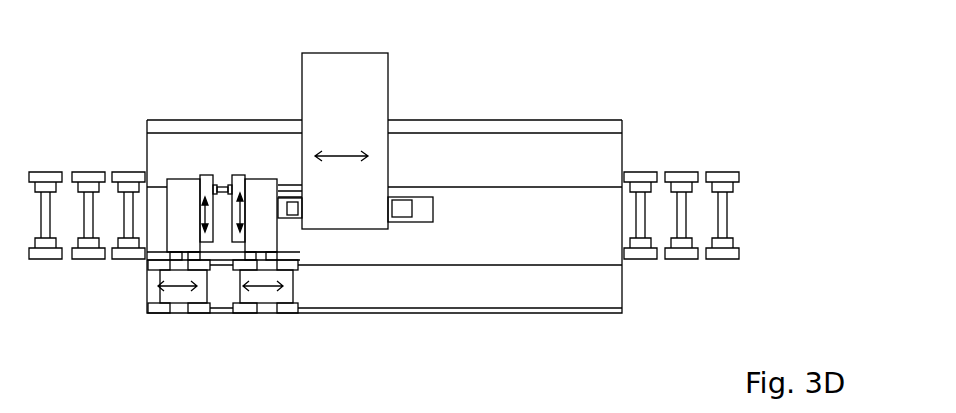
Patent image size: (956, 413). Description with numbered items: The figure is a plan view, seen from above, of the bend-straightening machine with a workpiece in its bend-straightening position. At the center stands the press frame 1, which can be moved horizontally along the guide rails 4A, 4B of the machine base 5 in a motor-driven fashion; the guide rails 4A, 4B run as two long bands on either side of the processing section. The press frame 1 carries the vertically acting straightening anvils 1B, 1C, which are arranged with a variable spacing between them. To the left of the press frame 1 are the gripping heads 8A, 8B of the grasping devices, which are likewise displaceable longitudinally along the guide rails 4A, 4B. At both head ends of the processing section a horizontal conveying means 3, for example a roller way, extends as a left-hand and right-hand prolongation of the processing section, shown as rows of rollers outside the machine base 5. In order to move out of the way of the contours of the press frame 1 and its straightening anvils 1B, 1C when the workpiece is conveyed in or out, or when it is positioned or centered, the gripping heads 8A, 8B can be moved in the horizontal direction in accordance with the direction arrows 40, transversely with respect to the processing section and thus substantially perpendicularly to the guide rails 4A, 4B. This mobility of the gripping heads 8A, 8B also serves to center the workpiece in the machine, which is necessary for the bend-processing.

The press frame 1 is at (407, 66).
The straightening anvil 1B is at (289, 212).
The straightening anvil 1C is at (402, 212).
The horizontal conveying means 3 is at (87, 151).
The guide rail 4A is at (530, 143).
The guide rail 4B is at (512, 267).
The machine base 5 is at (512, 119).
The gripping head 8A is at (203, 172).
The gripping head 8B is at (257, 175).
The direction arrows 40 is at (198, 222).